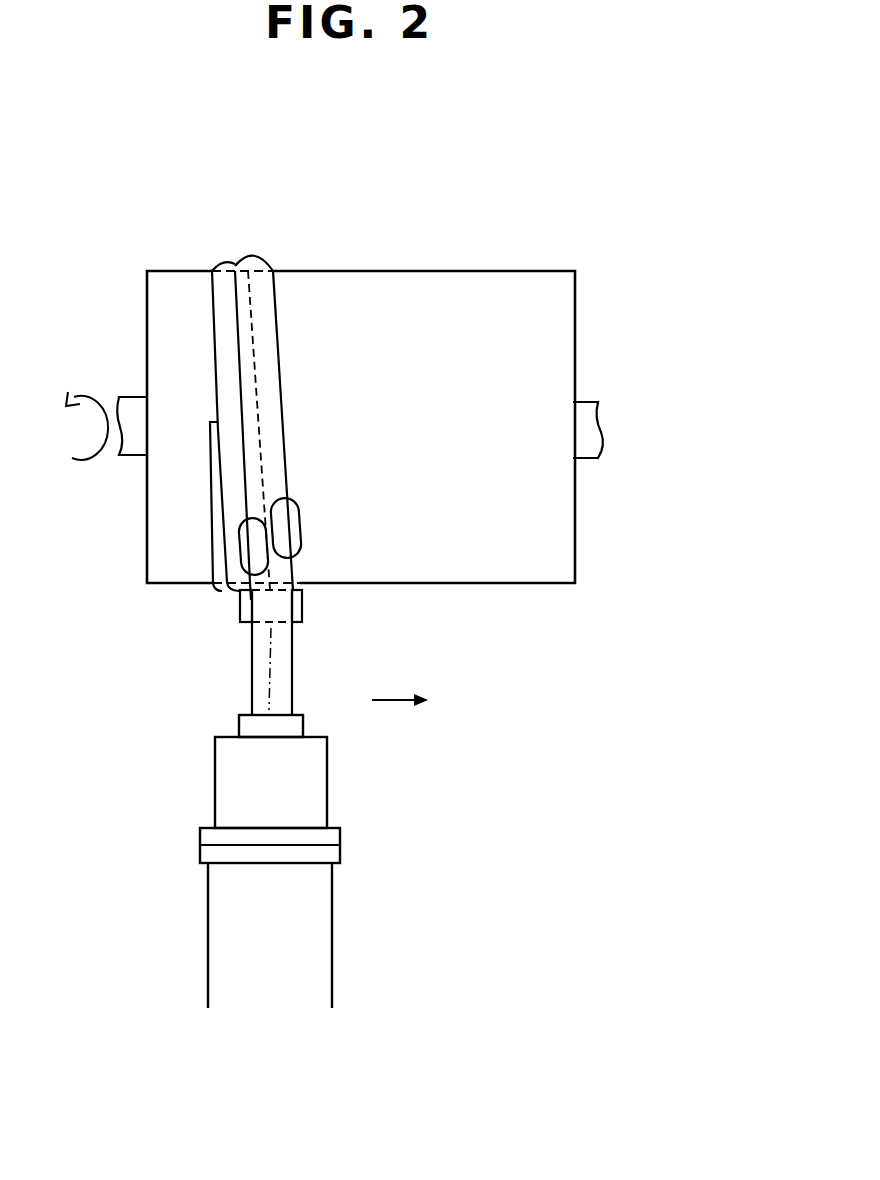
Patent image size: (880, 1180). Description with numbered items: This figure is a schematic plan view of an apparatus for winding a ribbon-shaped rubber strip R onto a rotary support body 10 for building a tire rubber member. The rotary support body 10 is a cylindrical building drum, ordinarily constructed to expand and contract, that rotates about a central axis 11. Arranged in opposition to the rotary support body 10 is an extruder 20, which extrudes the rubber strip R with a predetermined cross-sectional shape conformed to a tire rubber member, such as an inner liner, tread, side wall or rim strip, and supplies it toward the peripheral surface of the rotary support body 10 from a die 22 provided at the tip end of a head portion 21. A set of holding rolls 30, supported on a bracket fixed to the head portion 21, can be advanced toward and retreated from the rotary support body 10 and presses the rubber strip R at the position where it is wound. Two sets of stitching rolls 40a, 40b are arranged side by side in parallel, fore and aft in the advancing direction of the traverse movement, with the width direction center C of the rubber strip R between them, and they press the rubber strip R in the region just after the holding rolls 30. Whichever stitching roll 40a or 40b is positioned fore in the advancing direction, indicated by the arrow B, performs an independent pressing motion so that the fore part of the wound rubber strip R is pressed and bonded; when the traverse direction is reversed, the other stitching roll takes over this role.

The rotary support body 10 is at (519, 297).
The central axis 11 is at (582, 412).
The extruder 20 is at (317, 950).
The head portion 21 is at (226, 780).
The die 22 is at (250, 727).
The holding rolls 30 is at (303, 607).
The stitching roll 40a is at (300, 540).
The stitching roll 40b is at (243, 545).
The rubber strip R is at (270, 367).
The width direction center C is at (268, 649).
The arrow indicating advancing direction B is at (414, 702).